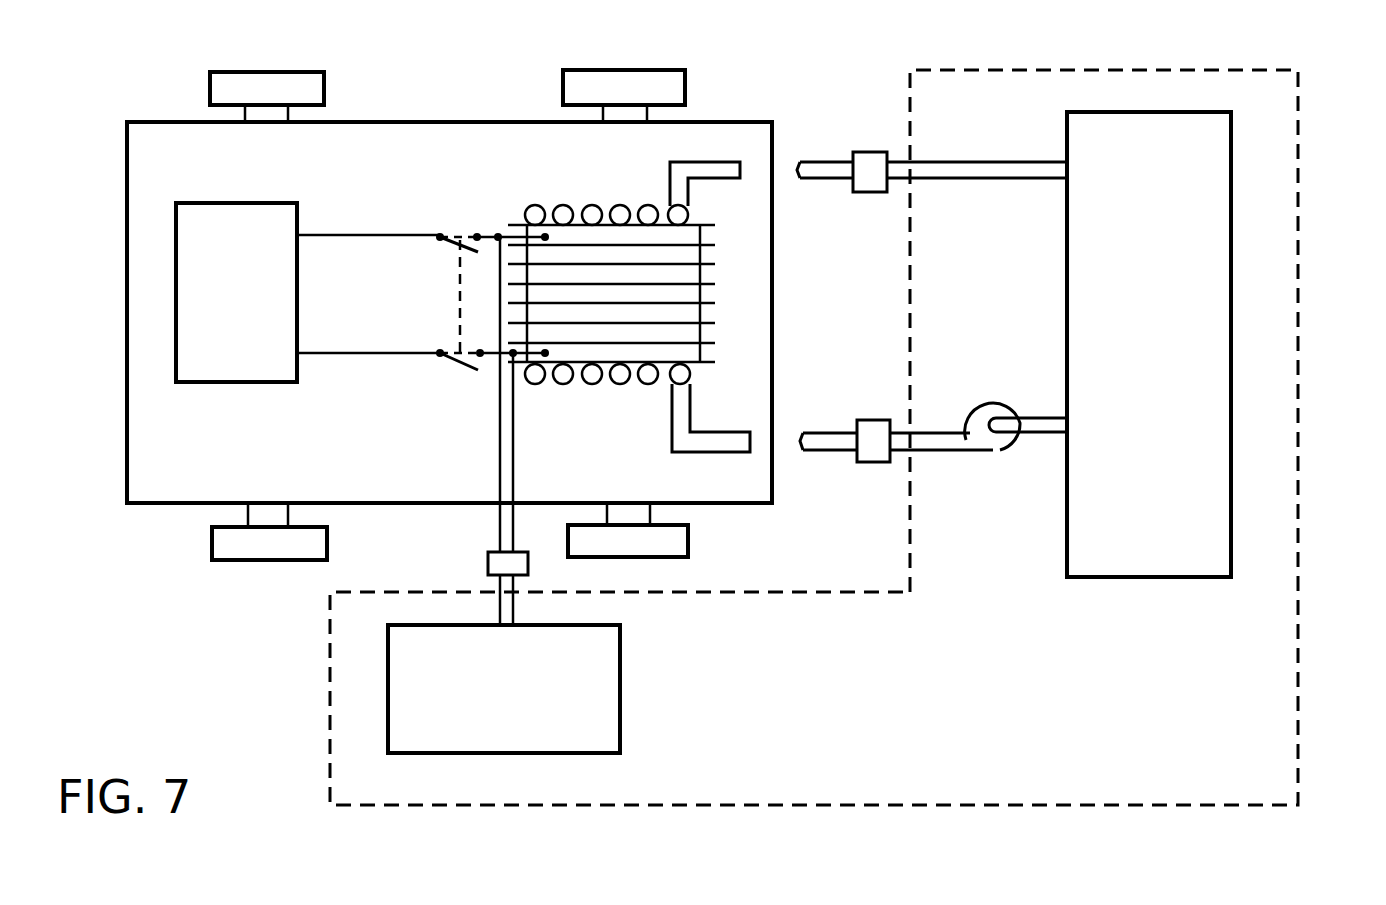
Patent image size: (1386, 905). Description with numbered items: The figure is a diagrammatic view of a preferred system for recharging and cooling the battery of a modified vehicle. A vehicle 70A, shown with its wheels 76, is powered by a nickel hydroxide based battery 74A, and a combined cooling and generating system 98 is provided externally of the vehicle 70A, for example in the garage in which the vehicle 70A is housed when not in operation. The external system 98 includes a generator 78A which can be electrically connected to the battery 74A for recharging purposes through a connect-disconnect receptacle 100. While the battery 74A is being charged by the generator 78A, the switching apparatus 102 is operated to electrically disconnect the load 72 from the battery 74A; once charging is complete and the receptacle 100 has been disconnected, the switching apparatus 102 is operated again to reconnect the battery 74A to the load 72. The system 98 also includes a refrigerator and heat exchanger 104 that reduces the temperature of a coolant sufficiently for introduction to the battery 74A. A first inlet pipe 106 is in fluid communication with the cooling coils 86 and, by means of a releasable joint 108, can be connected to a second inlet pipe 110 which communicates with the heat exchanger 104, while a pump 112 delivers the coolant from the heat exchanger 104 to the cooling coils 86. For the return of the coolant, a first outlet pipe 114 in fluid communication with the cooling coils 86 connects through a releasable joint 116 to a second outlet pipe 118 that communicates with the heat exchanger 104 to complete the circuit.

The vehicle 70A is at (756, 118).
The load 72 is at (245, 311).
The battery 74A is at (730, 330).
The wheels 76 is at (311, 80).
The generator 78A is at (514, 695).
The cooling coils 86 is at (622, 205).
The combined cooling and generating system 98 is at (1298, 310).
The connect-disconnect receptacle 100 is at (499, 558).
The switching apparatus 102 is at (472, 375).
The refrigerator and heat exchanger 104 is at (1160, 370).
The first inlet pipe 106 is at (836, 434).
The releasable joint 108 is at (876, 463).
The second inlet pipe 110 is at (1051, 417).
The pump 112 is at (996, 452).
The first outlet pipe 114 is at (830, 165).
The releasable joint 116 is at (870, 193).
The second outlet pipe 118 is at (1000, 180).